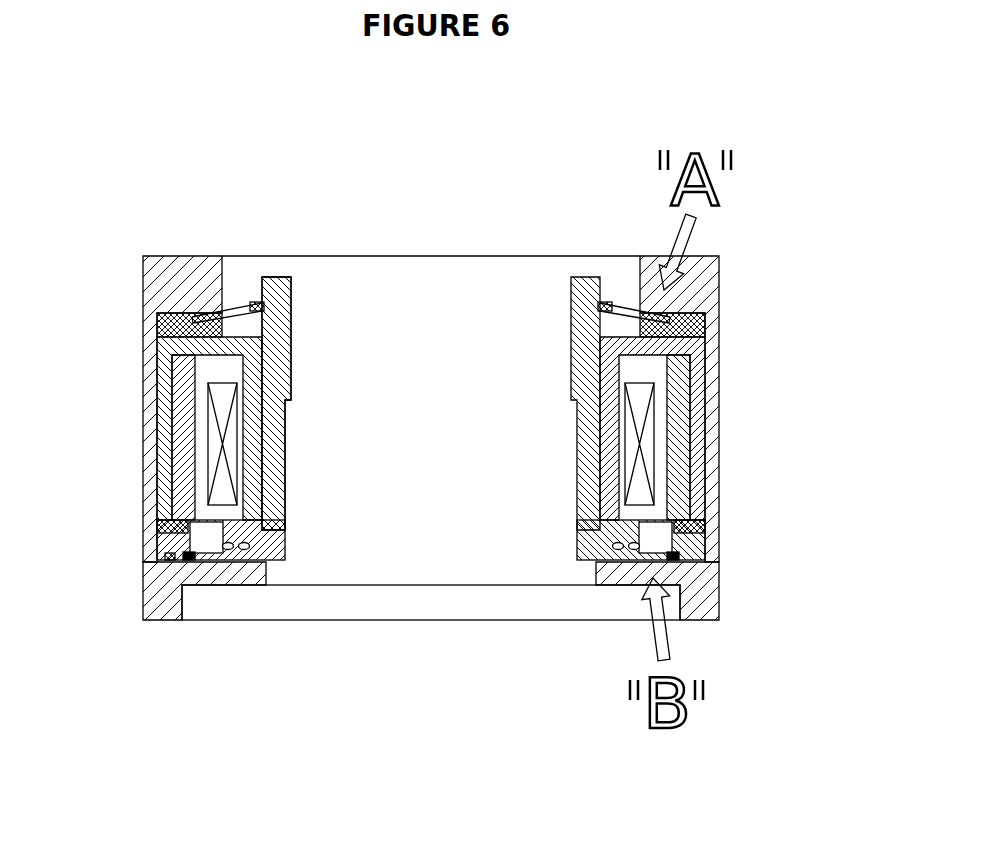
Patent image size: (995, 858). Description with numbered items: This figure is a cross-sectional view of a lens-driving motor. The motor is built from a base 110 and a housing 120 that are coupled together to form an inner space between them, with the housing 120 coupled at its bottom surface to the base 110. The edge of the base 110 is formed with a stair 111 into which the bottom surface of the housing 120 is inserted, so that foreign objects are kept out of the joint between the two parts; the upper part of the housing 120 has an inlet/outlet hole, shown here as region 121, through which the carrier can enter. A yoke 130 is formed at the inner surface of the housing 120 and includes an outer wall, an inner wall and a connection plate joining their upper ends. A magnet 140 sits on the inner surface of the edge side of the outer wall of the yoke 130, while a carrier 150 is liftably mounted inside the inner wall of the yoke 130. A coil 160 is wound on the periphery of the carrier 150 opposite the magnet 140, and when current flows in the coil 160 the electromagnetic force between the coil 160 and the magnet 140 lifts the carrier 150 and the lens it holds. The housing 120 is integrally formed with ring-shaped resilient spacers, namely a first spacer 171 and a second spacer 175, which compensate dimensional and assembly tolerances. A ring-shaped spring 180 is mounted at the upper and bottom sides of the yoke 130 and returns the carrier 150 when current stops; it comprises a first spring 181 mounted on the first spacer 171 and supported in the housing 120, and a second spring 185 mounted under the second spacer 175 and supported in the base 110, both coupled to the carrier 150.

The base 110 is at (700, 594).
The stair 111 is at (437, 602).
The housing 120 is at (708, 292).
The opening of cover member 121 is at (430, 274).
The yoke 130 is at (157, 380).
The magnet 140 is at (183, 433).
The carrier 150 is at (577, 497).
The coil 160 is at (210, 482).
The first spacer 171 is at (157, 330).
The second spacer 175 is at (160, 538).
The spring 180 is at (218, 168).
The first spring 181 is at (197, 318).
The second spring 185 is at (203, 552).